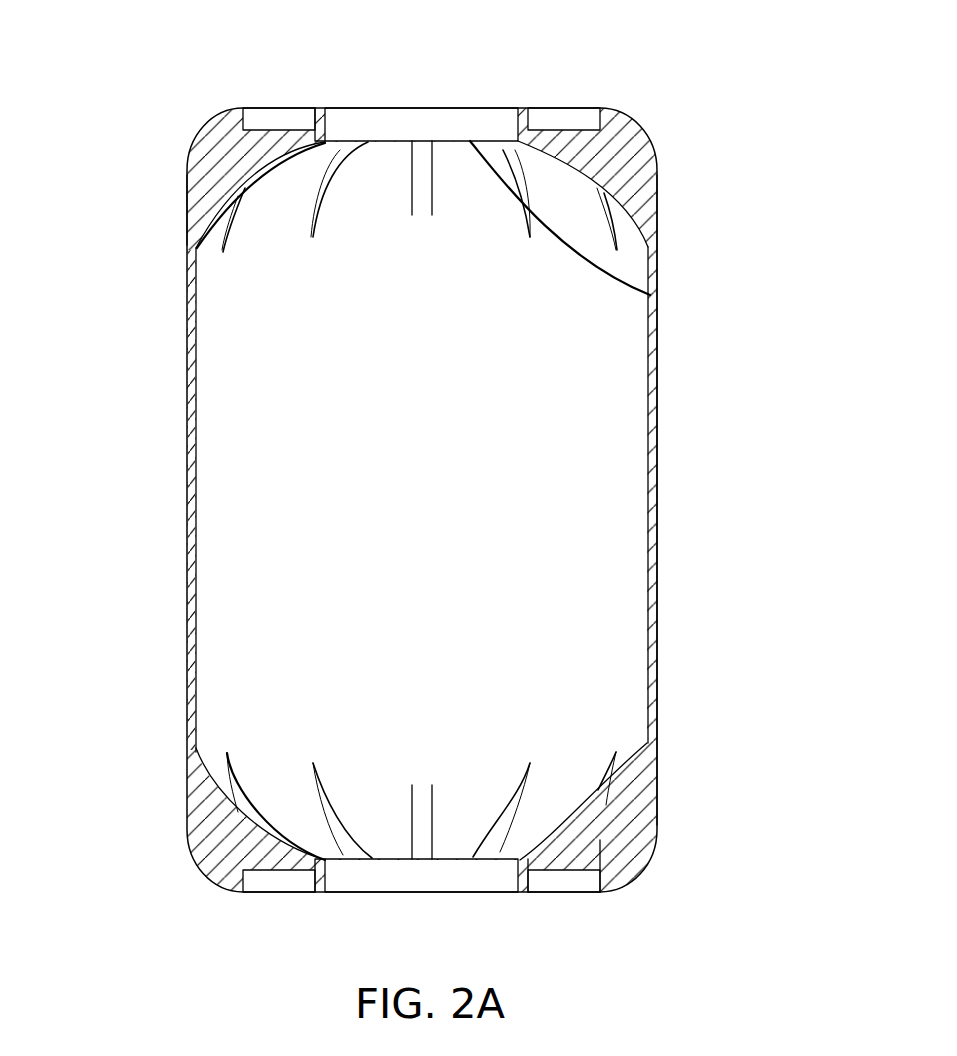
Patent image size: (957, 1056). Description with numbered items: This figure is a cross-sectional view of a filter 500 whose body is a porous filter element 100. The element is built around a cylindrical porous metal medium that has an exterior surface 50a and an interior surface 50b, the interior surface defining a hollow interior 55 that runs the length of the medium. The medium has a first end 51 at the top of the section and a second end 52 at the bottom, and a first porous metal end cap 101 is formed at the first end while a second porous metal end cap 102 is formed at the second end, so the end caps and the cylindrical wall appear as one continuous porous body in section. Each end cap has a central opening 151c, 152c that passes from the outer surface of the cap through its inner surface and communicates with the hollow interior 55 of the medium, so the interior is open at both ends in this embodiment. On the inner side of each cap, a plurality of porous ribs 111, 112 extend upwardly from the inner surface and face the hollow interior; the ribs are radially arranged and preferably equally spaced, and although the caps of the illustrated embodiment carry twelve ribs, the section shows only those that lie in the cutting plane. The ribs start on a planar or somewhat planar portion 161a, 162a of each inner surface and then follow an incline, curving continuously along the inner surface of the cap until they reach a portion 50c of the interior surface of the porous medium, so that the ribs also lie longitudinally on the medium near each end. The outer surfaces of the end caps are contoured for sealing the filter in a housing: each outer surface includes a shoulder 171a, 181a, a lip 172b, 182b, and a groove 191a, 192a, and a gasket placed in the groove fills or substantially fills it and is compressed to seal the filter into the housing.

The filter 500 is at (163, 63).
The porous filter element 100 is at (168, 381).
The first end 51 is at (187, 250).
The second end 52 is at (657, 742).
The hollow interior 55 is at (437, 480).
The exterior surface 50a is at (658, 497).
The interior surface 50b is at (647, 440).
The portion of the interior surface 50c is at (213, 753).
The first porous metal end cap 101 is at (622, 158).
The second porous metal end cap 102 is at (627, 835).
The porous ribs 111 is at (600, 207).
The porous ribs 112 is at (520, 813).
The central opening 151c is at (402, 120).
The central opening 152c is at (437, 877).
The planar portion of the inner surface 161a is at (650, 295).
The planar portion of the inner surface 162a is at (500, 850).
The shoulder 171a is at (243, 108).
The lip 172b is at (318, 108).
The shoulder 181a is at (243, 892).
The lip 182b is at (316, 890).
The groove 191a is at (562, 118).
The groove 192a is at (555, 880).